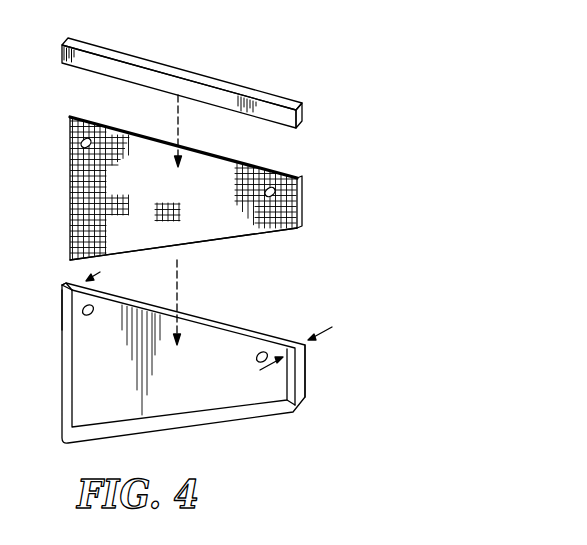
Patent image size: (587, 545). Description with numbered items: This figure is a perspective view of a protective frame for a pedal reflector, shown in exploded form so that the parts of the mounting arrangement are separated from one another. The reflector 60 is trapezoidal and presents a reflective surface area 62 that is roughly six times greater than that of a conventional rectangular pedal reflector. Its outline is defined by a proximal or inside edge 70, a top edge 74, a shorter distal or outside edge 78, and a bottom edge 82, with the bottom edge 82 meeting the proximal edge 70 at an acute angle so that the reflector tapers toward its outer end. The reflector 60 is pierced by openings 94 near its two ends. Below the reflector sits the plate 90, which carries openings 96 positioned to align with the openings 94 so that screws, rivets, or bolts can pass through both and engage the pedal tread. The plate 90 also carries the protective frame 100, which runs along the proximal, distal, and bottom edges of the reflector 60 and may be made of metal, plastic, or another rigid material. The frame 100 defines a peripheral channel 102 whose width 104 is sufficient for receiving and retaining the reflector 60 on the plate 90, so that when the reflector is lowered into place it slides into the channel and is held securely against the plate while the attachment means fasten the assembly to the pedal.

The reflector 60 is at (226, 151).
The reflective surface area 62 is at (188, 185).
The proximal edge 70 is at (189, 187).
The top edge 74 is at (133, 135).
The distal edge 78 is at (300, 203).
The bottom edge 82 is at (254, 235).
The openings 94 is at (82, 141).
The plate 90 is at (208, 350).
The openings 96 is at (94, 305).
The protective frame 100 is at (292, 400).
The peripheral channel 102 is at (69, 282).
The width 104 is at (60, 296).